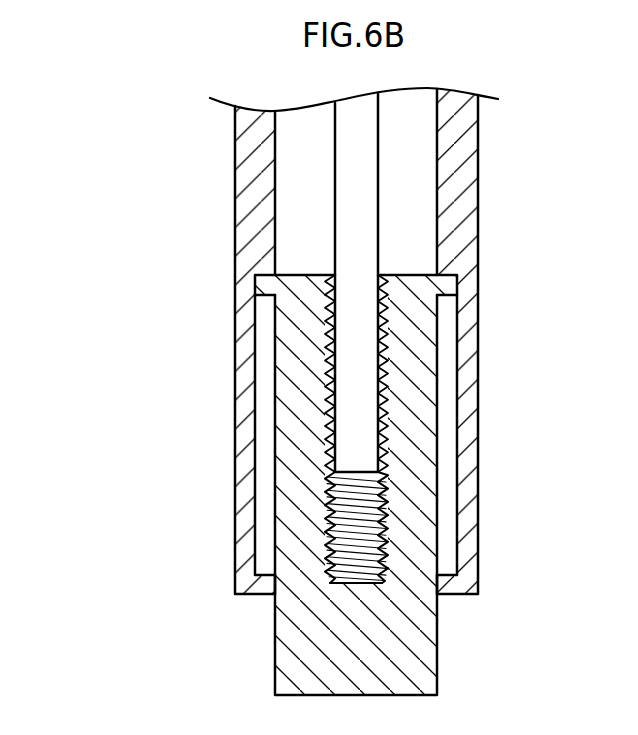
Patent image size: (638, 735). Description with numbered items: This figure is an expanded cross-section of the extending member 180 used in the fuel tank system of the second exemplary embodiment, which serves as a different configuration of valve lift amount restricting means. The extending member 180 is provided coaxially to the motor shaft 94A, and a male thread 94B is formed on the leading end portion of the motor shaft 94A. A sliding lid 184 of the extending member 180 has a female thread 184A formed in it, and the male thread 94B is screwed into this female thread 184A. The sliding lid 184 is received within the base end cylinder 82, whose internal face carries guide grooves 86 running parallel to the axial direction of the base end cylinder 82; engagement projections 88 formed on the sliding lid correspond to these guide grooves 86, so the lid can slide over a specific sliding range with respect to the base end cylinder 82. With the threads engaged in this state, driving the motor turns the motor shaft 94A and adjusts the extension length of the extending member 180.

The extending member 180 is at (138, 633).
The base end cylinder 82 is at (233, 532).
The guide groove 86 is at (259, 428).
The engagement projection 88 is at (263, 303).
The sliding lid 184 is at (275, 653).
The female thread 184A is at (333, 275).
The motor shaft 94A is at (378, 185).
The male thread 94B is at (372, 520).